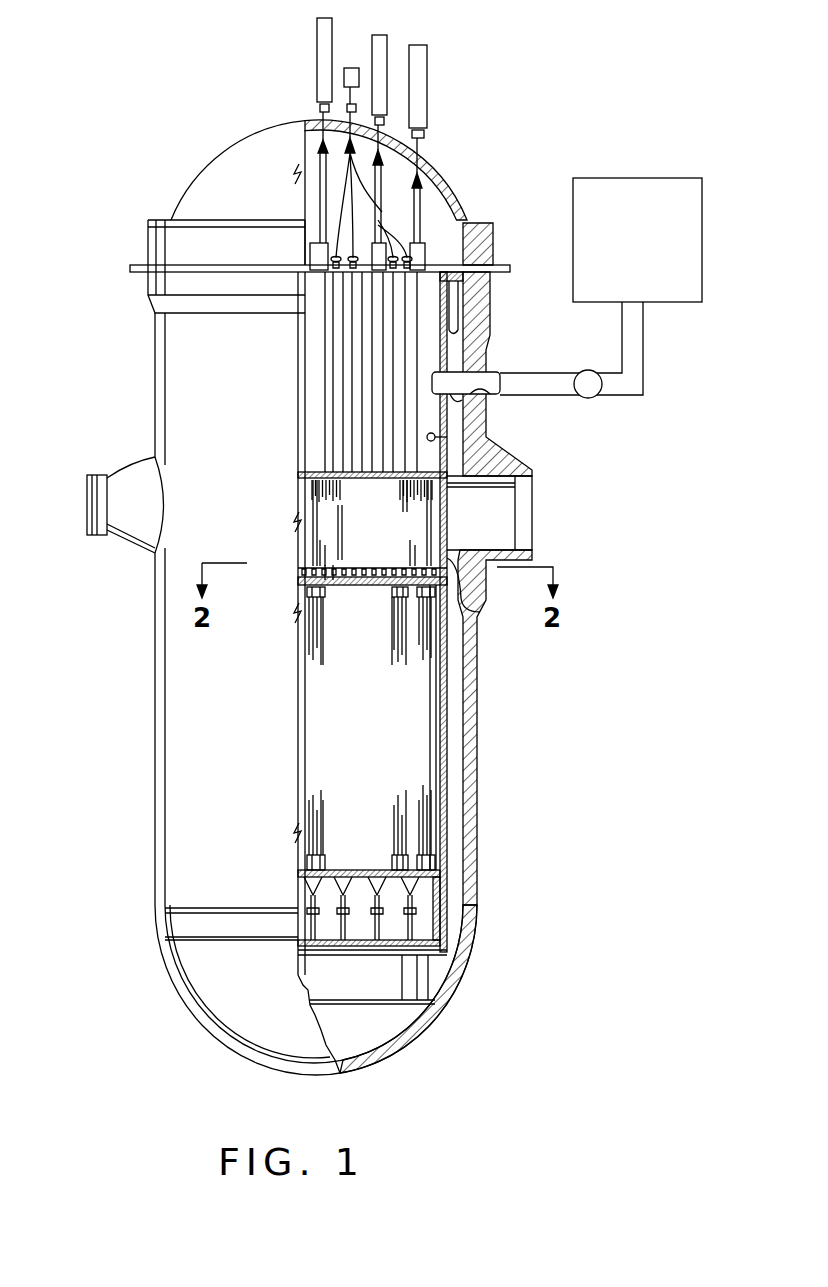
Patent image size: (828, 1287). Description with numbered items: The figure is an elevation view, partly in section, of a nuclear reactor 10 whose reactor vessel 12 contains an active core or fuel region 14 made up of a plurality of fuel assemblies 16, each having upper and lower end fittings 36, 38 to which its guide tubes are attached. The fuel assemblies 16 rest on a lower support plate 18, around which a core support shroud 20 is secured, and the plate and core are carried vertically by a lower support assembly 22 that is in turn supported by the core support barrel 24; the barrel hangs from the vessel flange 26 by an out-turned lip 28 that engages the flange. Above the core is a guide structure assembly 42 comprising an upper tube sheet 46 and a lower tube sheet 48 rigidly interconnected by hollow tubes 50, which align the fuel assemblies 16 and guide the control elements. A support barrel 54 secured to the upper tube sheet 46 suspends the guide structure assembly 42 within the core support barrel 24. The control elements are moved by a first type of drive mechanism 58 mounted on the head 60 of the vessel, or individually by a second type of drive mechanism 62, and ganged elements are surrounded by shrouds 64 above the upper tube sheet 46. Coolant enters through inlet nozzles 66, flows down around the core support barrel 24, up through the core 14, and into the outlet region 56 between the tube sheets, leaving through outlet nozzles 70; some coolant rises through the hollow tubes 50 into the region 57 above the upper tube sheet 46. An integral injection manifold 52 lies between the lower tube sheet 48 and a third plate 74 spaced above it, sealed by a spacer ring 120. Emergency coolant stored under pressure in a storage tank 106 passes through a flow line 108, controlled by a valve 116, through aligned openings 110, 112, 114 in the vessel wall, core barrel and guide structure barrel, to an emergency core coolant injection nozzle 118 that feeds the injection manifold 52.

The nuclear reactor 10 is at (131, 410).
The reactor vessel 12 is at (478, 758).
The active core or fuel region 14 is at (343, 742).
The fuel assemblies 16 is at (392, 640).
The lower support plate 18 is at (345, 866).
The core support shroud 20 is at (425, 800).
The lower support assembly 22 is at (440, 942).
The core support barrel 24 is at (445, 873).
The vessel flange 26 is at (490, 290).
The out-turned lip 28 is at (484, 268).
The upper end fitting 36 is at (326, 600).
The lower end fitting 38 is at (325, 850).
The guide structure assembly 42 is at (309, 466).
The upper tube sheet 46 is at (405, 490).
The lower tube sheet 48 is at (390, 589).
The hollow tubes 50 is at (335, 520).
The injection manifold 52 is at (300, 565).
The support barrel 54 is at (462, 330).
The outlet region 56 is at (372, 557).
The region above the upper tube sheet 57 is at (360, 393).
The first type of drive mechanism 58 is at (427, 62).
The head 60 is at (450, 180).
The second type of drive mechanism 62 is at (351, 68).
The shrouds 64 is at (372, 430).
The inlet nozzles 66 is at (140, 552).
The outlet nozzles 70 is at (530, 554).
The third plate 74 is at (330, 574).
The storage tank 106 is at (620, 178).
The flow line 108 is at (655, 372).
The opening in the vessel wall 110 is at (490, 392).
The opening in the core barrel 112 is at (470, 405).
The opening in the guide structure barrel 114 is at (470, 375).
The valve 116 is at (602, 396).
The emergency core coolant injection nozzle 118 is at (447, 440).
The spacer ring 120 is at (479, 614).